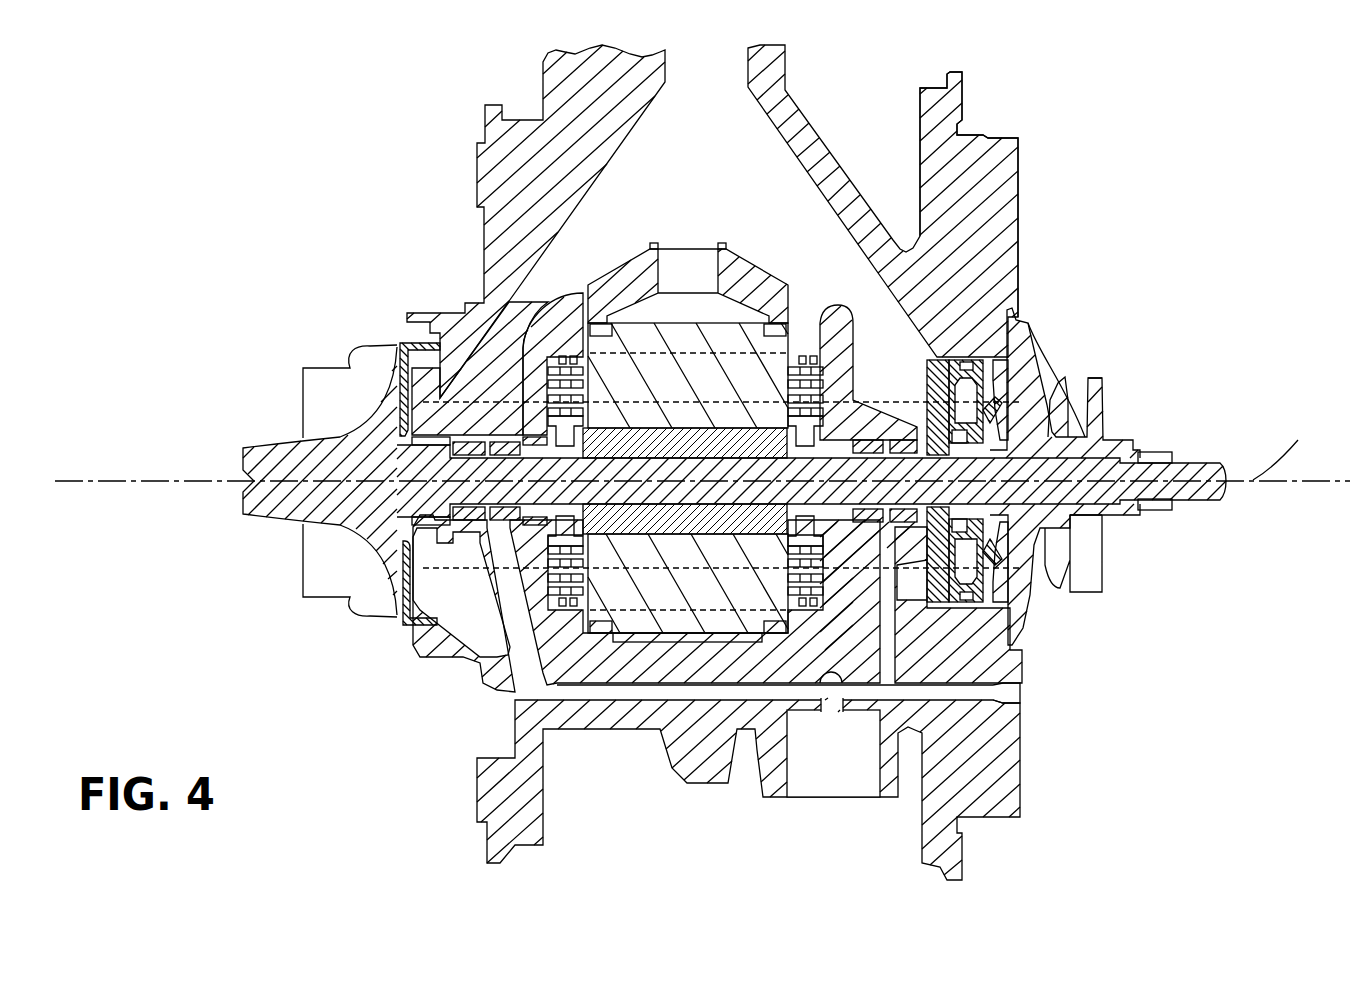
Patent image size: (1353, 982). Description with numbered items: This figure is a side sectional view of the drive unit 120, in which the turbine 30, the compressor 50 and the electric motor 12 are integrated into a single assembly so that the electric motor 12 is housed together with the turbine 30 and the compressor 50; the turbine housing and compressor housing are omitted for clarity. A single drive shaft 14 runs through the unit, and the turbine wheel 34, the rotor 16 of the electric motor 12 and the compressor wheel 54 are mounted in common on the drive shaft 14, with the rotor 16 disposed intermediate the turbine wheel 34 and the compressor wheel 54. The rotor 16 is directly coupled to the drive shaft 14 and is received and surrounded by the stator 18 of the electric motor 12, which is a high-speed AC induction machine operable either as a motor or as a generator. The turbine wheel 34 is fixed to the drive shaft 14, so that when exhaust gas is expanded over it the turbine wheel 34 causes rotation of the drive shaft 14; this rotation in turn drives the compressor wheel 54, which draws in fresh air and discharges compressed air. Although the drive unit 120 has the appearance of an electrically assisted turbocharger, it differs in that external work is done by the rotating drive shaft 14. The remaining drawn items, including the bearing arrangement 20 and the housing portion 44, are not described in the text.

The drive unit 120 is at (219, 112).
The electric motor 12 is at (626, 263).
The drive shaft 14 is at (1190, 464).
The rotor 16 is at (765, 432).
The stator 18 is at (732, 357).
The bearing 20 is at (555, 330).
The turbine 30 is at (289, 466).
The turbine wheel 34 is at (283, 528).
The turbine housing 44 is at (1000, 193).
The compressor 50 is at (1087, 436).
The compressor wheel 54 is at (1095, 420).